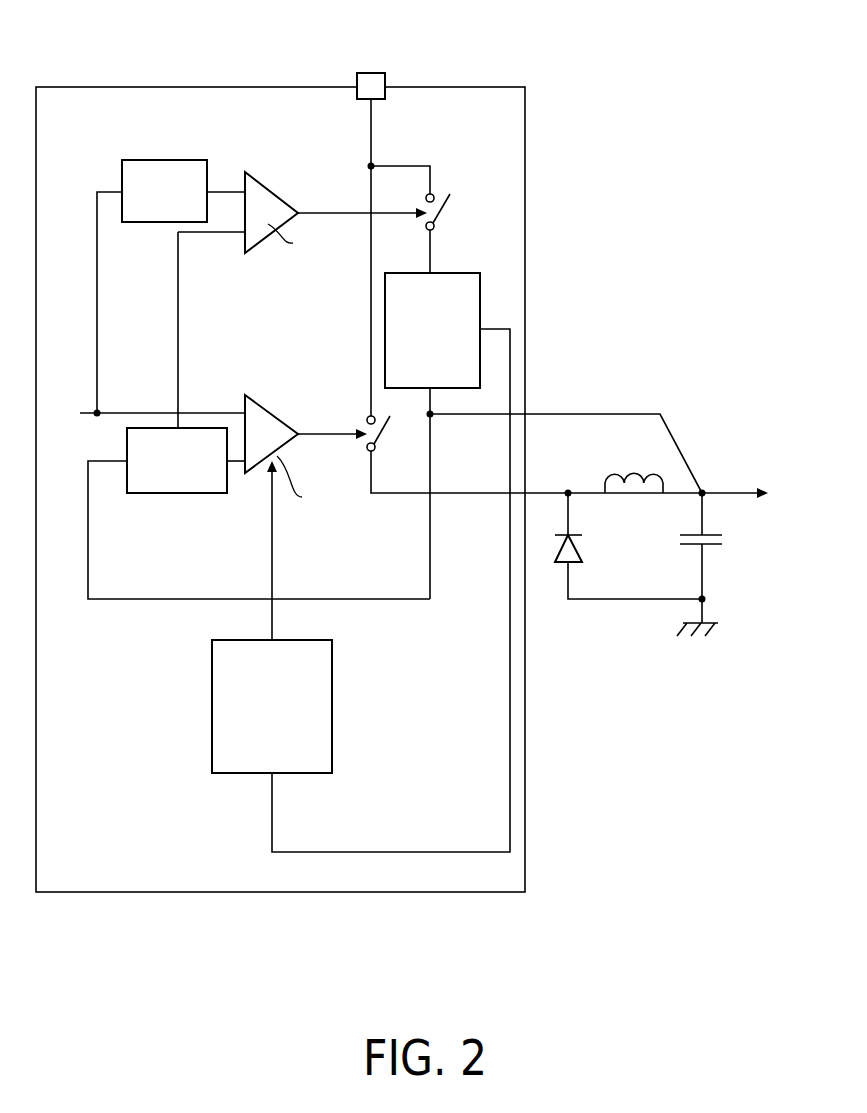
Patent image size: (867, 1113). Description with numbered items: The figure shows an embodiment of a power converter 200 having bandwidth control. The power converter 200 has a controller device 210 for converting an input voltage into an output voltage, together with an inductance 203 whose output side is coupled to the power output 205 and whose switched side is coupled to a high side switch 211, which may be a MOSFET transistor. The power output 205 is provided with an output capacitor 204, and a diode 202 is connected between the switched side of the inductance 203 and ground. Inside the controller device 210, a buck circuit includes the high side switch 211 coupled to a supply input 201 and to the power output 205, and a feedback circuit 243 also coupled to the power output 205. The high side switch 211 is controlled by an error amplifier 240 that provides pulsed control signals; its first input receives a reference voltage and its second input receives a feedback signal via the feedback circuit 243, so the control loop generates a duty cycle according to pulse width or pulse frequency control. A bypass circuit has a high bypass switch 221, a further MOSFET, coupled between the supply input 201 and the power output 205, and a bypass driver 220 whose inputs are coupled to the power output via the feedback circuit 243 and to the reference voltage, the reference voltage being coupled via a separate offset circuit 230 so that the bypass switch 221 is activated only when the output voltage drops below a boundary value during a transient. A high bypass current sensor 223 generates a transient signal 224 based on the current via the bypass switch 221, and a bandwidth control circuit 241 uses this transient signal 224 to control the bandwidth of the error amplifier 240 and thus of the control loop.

The power converter 200 is at (647, 53).
The supply input 201 is at (357, 82).
The diode 202 is at (561, 564).
The inductance 203 is at (648, 494).
The capacitor Cout 204 is at (690, 546).
The power output 205 is at (726, 492).
The controller device 210 is at (525, 748).
The high side switch 211 is at (388, 427).
The bypass driver 220 is at (268, 189).
The high bypass switch 221 is at (450, 195).
The high bypass current sensor 223 is at (413, 272).
The transient signal 224 is at (397, 852).
The offset circuit 230 is at (144, 160).
The error amplifier 240 is at (263, 405).
The bandwidth control circuit 241 is at (212, 690).
The feedback circuit 243 is at (185, 494).